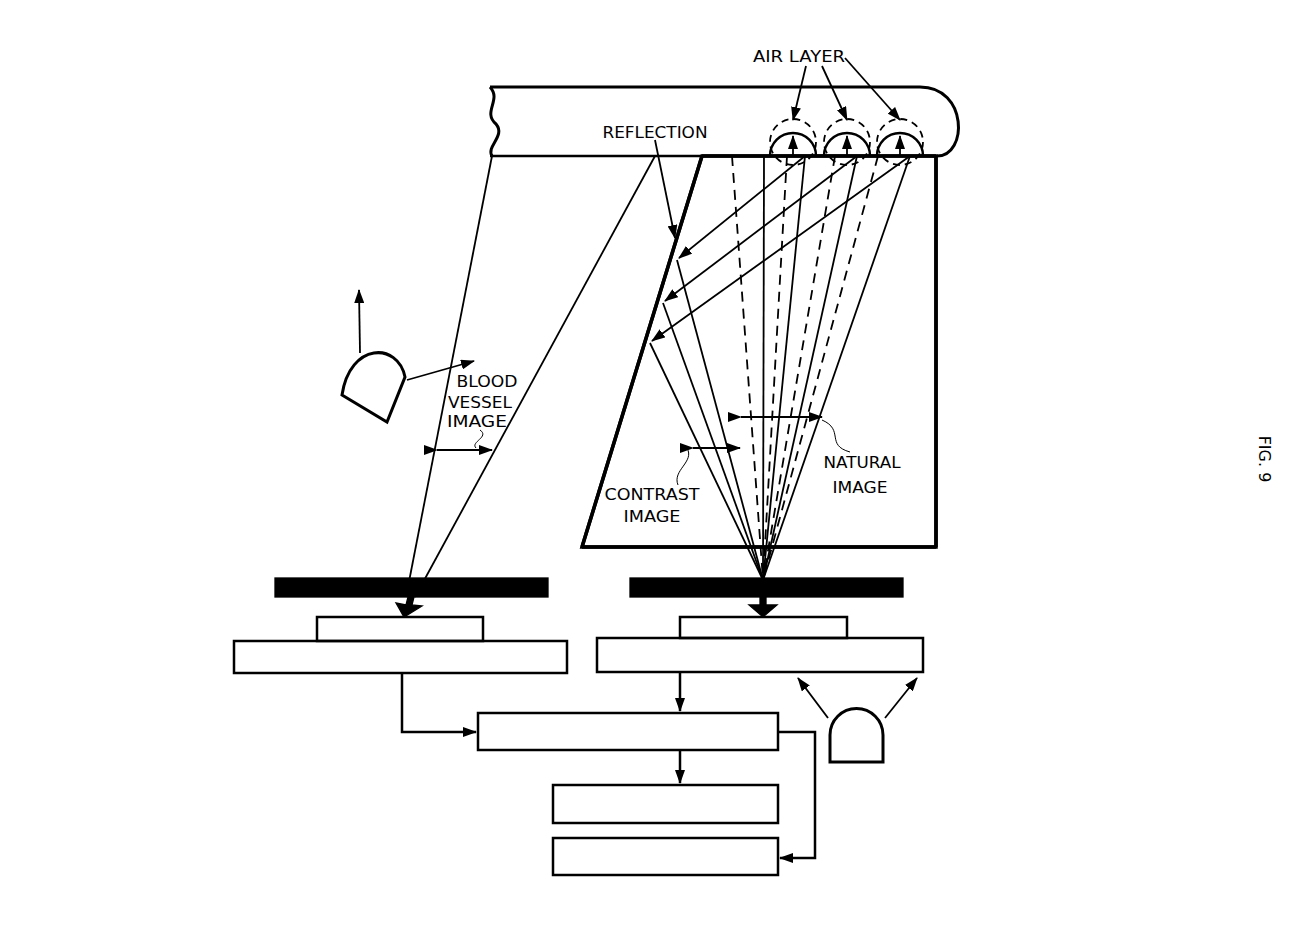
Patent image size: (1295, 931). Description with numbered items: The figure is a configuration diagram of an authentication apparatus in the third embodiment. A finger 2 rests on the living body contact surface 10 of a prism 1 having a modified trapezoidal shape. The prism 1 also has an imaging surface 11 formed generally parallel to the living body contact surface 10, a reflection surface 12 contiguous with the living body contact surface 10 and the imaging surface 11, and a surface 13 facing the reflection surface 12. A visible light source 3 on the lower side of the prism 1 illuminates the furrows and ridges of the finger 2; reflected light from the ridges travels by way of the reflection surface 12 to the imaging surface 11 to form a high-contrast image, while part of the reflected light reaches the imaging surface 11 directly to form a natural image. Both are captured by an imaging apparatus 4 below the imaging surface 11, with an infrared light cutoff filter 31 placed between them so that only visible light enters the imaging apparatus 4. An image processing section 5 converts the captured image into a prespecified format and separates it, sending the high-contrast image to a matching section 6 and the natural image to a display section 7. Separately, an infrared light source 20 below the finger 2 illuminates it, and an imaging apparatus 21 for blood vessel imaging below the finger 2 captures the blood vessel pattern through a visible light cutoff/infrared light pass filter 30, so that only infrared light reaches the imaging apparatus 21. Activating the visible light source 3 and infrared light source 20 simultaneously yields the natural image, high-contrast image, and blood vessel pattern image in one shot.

The prism 1 is at (1030, 273).
The finger 2 is at (657, 86).
The visible light source 3 is at (919, 730).
The imaging apparatus 4 is at (760, 644).
The image processing section 5 is at (628, 731).
The matching section 6 is at (665, 804).
The display section 7 is at (665, 856).
The living body contact surface 10 is at (942, 152).
The imaging surface 11 is at (861, 551).
The reflection surface 12 is at (602, 462).
The surface 13 is at (942, 380).
The infrared light source 20 is at (350, 372).
The imaging apparatus 21 is at (400, 645).
The visible light cutoff/infrared light pass filter 30 is at (340, 550).
The infrared light cutoff filter 31 is at (928, 610).